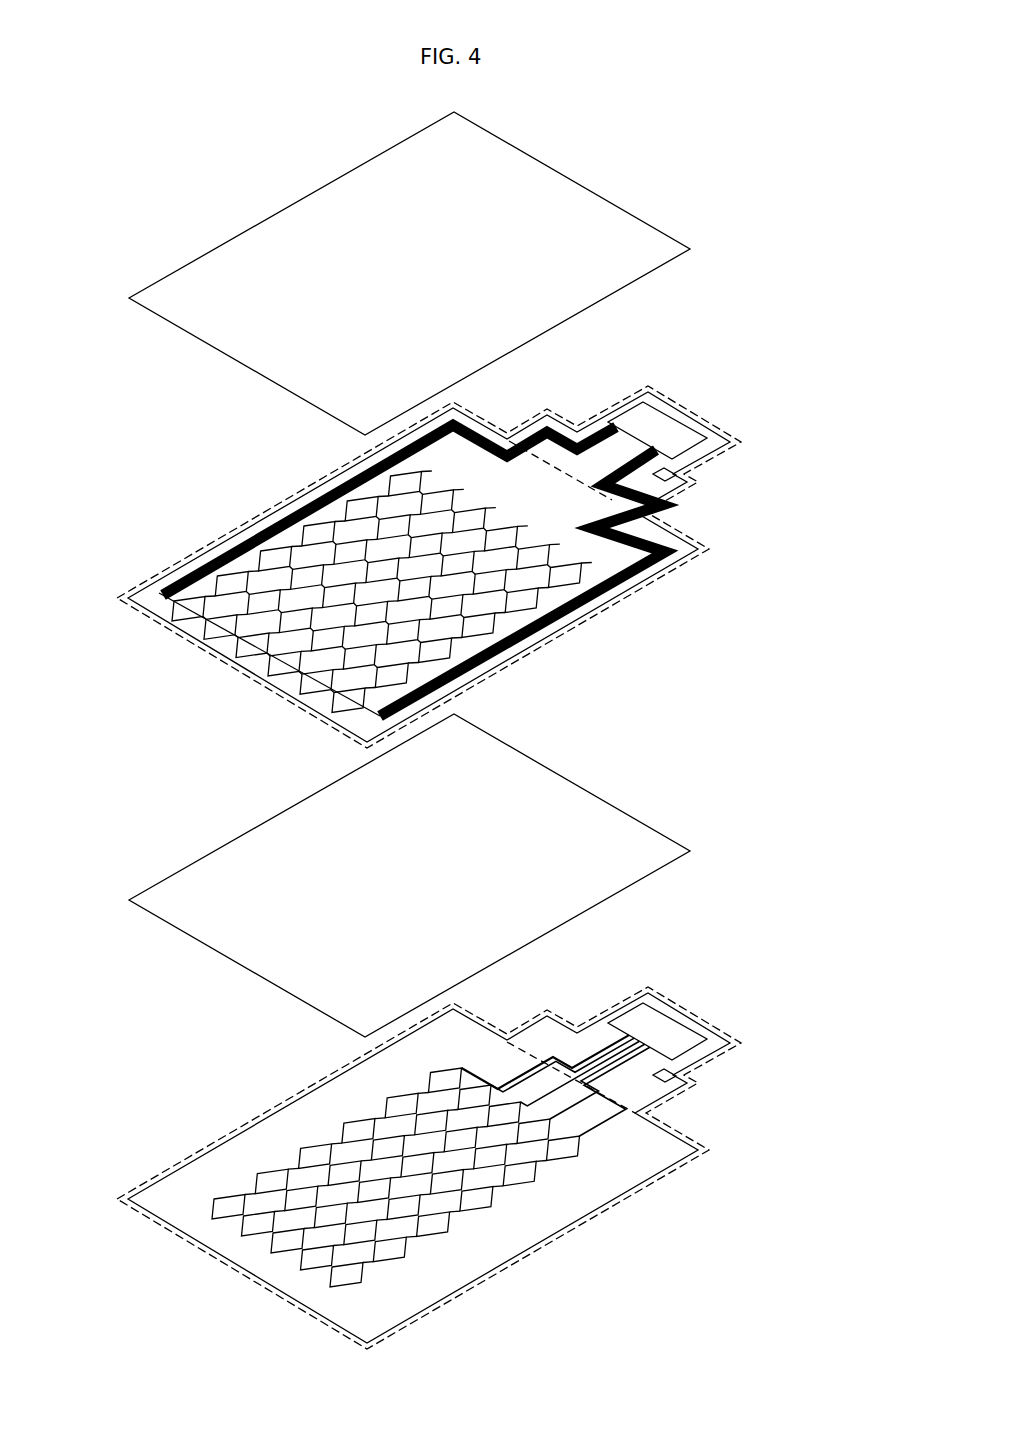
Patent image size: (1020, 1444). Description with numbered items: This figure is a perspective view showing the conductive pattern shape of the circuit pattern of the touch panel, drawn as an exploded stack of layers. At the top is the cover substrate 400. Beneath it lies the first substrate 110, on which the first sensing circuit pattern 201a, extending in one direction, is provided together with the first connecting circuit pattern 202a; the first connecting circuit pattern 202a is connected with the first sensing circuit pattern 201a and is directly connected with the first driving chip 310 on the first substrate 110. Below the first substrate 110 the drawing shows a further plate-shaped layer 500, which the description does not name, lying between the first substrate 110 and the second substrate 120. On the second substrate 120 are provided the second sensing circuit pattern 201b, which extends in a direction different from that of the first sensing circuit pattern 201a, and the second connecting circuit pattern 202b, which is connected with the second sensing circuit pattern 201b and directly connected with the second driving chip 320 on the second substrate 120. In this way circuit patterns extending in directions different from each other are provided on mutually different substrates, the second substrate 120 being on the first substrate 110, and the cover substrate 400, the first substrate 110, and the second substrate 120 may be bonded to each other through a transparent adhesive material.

The cover substrate 400 is at (283, 208).
The first substrate 110 is at (152, 595).
The first sensing circuit pattern 201a is at (487, 625).
The first connecting circuit pattern 202a is at (688, 476).
The first driving chip 310 is at (665, 427).
The adhesive layer 500 is at (283, 810).
The second substrate 120 is at (152, 1197).
The second sensing circuit pattern 201b is at (500, 1206).
The second connecting circuit pattern 202b is at (602, 1050).
The second driving chip 320 is at (665, 1028).